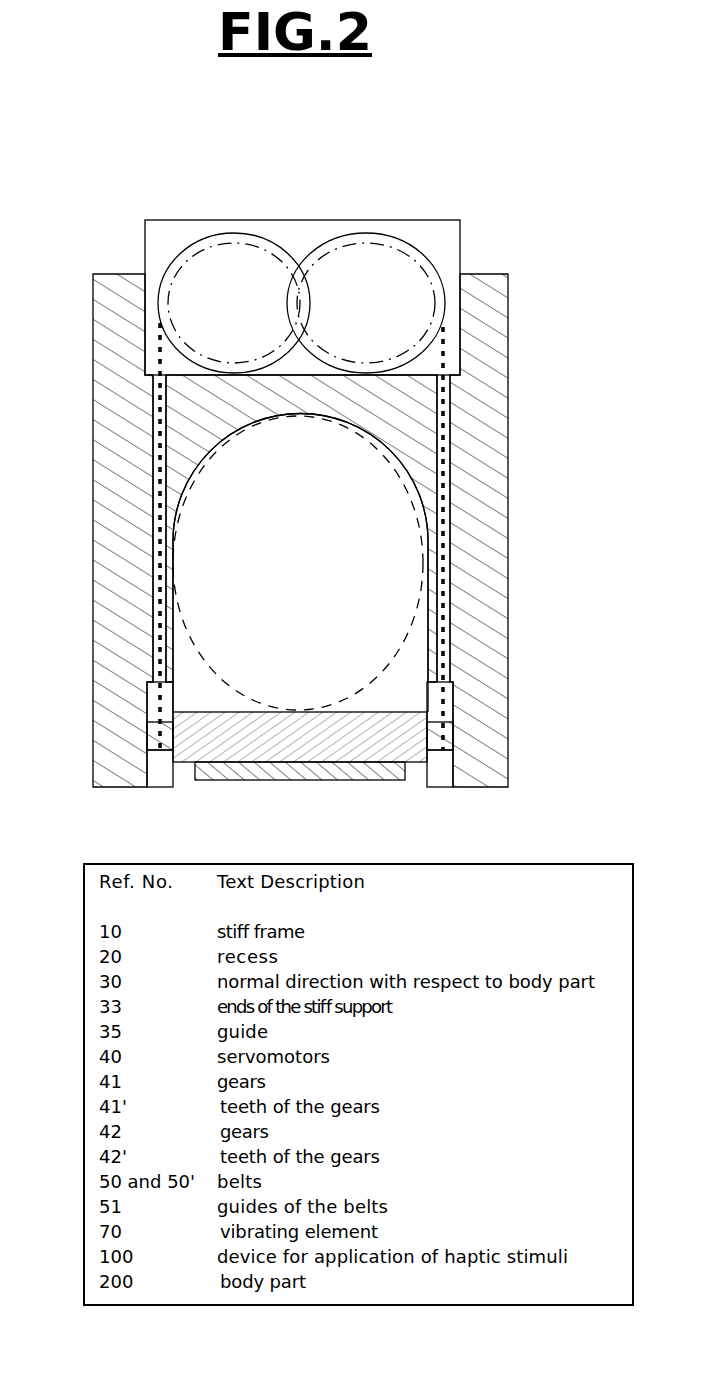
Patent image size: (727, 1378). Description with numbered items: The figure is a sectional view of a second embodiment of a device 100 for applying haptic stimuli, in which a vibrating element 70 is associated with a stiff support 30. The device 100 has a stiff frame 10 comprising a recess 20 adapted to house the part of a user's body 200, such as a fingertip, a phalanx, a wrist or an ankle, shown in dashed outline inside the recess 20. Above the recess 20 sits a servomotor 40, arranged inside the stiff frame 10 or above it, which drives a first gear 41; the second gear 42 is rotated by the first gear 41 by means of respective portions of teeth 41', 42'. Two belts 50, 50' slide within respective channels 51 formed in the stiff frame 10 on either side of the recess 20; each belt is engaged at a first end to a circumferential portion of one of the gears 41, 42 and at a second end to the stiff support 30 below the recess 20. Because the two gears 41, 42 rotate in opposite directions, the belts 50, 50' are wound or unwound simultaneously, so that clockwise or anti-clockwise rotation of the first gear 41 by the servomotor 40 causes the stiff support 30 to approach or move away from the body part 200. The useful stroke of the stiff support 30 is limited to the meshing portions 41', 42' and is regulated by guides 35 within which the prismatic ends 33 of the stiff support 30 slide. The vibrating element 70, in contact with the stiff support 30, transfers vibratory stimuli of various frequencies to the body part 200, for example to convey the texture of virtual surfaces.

The stiff frame 10 is at (93, 289).
The recess 20 is at (416, 705).
The stiff support 30 is at (390, 752).
The prismatic ends 33 is at (155, 744).
The guides 35 is at (159, 786).
The servomotor 40 is at (141, 229).
The first gear 41 is at (234, 271).
The portion of teeth of the first gear 41' is at (234, 303).
The second gear 42 is at (366, 277).
The portion of teeth of the second gear 42' is at (366, 303).
The belt 50 is at (496, 538).
The belt 50' is at (95, 536).
The channels 51 is at (153, 445).
The vibrating element 70 is at (218, 780).
The device for applying haptic stimuli 100 is at (540, 223).
The part of a user's body 200 is at (375, 587).